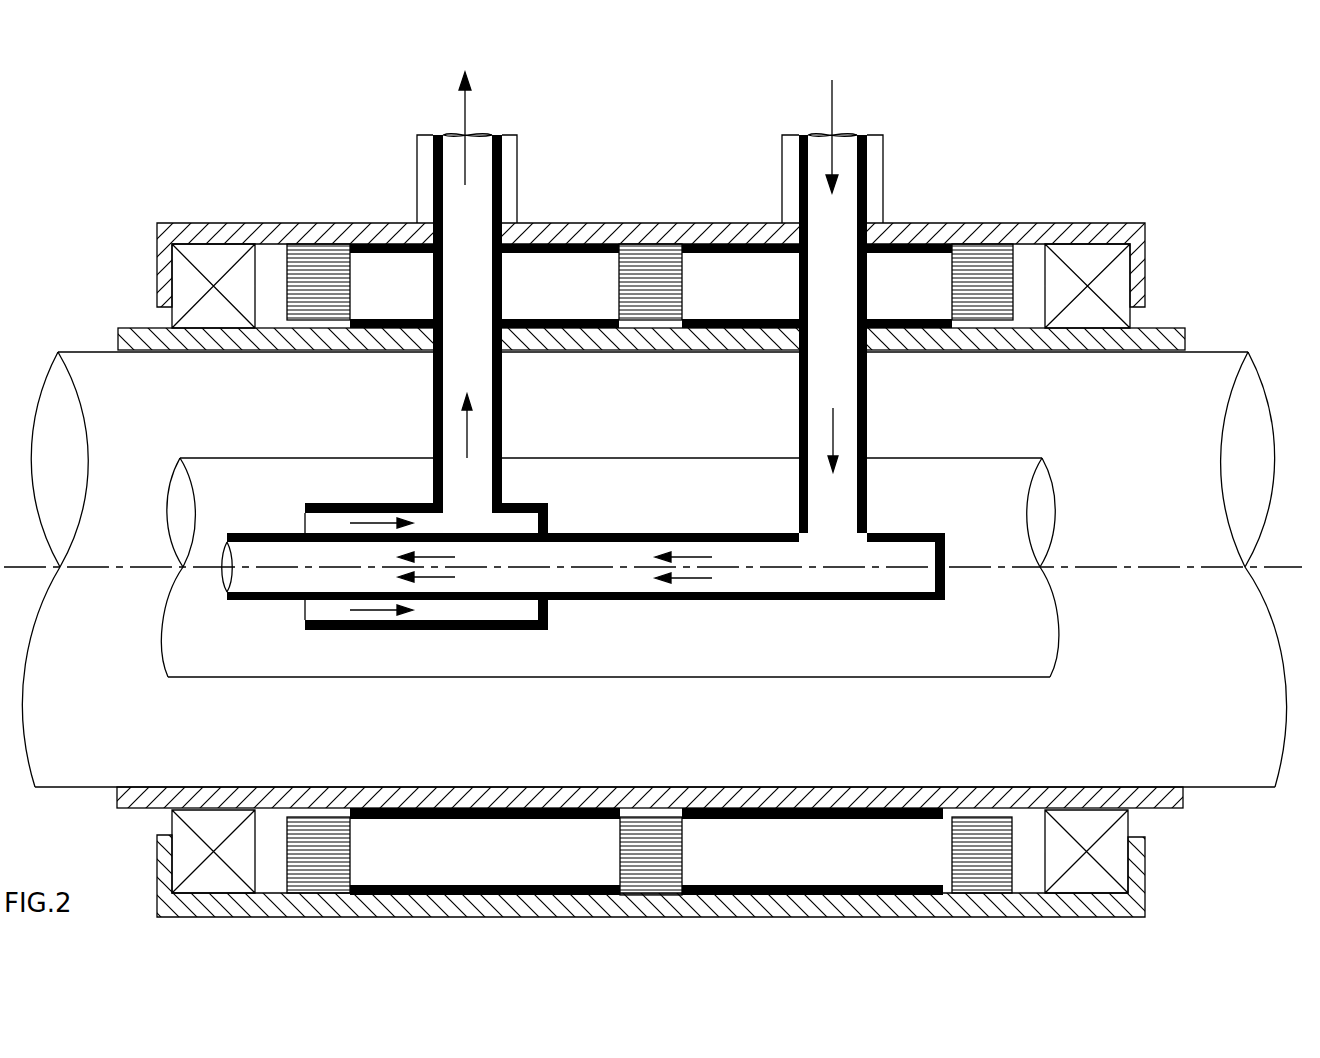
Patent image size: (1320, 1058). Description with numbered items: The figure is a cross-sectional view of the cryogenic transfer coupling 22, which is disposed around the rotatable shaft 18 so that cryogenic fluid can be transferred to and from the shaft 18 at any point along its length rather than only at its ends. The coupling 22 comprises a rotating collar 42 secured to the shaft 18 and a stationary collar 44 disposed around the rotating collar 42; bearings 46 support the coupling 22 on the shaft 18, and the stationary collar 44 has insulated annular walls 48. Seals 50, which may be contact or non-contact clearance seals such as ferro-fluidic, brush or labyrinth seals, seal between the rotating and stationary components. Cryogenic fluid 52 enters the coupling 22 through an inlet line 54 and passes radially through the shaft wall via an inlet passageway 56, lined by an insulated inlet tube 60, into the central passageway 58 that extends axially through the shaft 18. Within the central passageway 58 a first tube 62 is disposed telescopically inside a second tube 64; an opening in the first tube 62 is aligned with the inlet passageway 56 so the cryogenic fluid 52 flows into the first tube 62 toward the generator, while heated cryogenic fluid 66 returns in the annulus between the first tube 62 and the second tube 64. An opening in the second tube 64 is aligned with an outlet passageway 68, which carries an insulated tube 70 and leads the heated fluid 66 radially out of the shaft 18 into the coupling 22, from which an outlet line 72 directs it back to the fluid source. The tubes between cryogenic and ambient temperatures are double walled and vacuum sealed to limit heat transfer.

The shaft 18 is at (1243, 352).
The cryogenic transfer coupling 22 is at (1222, 114).
The rotating collar 42 is at (1161, 328).
The stationary collar 44 is at (205, 223).
The bearings 46 is at (1092, 258).
The insulated annular walls 48 is at (538, 322).
The seals 50 is at (310, 254).
The cryogenic fluid 52 is at (832, 115).
The inlet line 54 is at (878, 182).
The inlet passageway 56 is at (798, 362).
The central passageway 58 is at (1009, 458).
The inlet tube 60 is at (798, 446).
The first tube 62 is at (822, 605).
The second tube 64 is at (415, 624).
The heated cryogenic fluid 66 is at (465, 115).
The outlet passageway 68 is at (433, 362).
The insulated tube 70 is at (433, 446).
The outlet line 72 is at (512, 182).